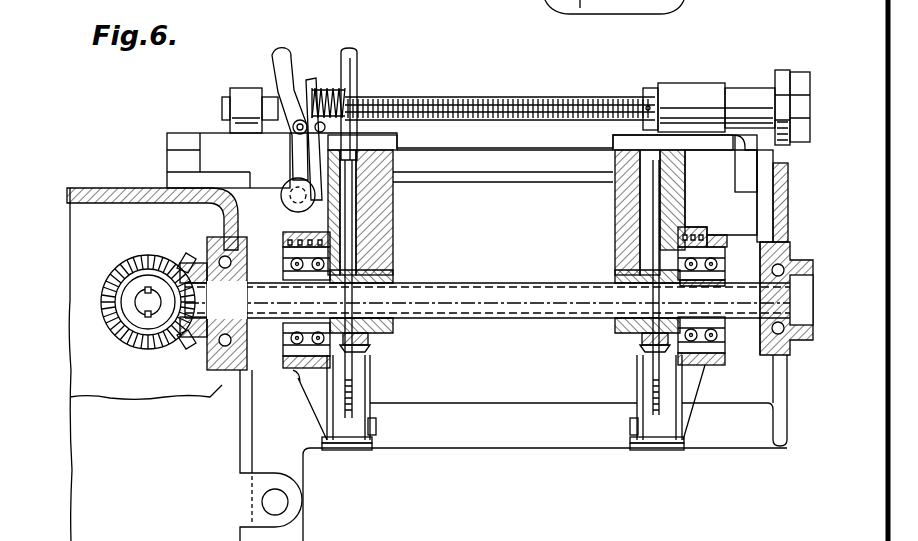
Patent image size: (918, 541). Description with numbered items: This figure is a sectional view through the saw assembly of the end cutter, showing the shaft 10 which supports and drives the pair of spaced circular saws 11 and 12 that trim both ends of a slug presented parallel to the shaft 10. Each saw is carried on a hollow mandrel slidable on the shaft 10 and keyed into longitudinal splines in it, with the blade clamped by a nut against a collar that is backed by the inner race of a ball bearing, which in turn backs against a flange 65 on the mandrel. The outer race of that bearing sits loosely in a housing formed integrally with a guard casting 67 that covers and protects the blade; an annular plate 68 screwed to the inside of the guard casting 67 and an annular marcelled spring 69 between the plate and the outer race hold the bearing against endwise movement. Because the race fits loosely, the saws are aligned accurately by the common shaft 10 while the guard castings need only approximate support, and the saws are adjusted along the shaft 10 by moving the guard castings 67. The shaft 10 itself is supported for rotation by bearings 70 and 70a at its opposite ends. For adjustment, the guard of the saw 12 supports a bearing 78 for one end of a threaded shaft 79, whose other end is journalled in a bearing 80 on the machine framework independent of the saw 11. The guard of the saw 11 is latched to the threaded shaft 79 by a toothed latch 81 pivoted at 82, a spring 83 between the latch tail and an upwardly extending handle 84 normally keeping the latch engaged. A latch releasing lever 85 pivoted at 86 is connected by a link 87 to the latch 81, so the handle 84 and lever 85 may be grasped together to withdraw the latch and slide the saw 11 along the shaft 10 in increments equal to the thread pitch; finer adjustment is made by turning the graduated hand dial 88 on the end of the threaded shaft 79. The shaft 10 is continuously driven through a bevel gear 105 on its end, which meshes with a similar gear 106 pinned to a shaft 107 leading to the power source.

The shaft 10 is at (528, 296).
The circular saw 11 is at (360, 395).
The circular saw 12 is at (653, 386).
The flange 65 is at (708, 276).
The guard casting 67 is at (683, 200).
The annular plate 68 is at (653, 362).
The annular marcelled spring 69 is at (690, 236).
The bearing 70 is at (780, 262).
The bearing 70a is at (215, 350).
The bearing 78 is at (688, 88).
The threaded shaft 79 is at (537, 97).
The bearing 80 is at (248, 90).
The latch 81 is at (326, 127).
The pivot 82 is at (294, 130).
The spring 83 is at (326, 86).
The handle 84 is at (358, 70).
The latch releasing lever 85 is at (284, 56).
The pivot 86 is at (285, 206).
The link 87 is at (313, 158).
The graduated hand dial 88 is at (792, 72).
The bevel gear 105 is at (186, 262).
The gear 106 is at (128, 262).
The shaft 107 is at (146, 305).